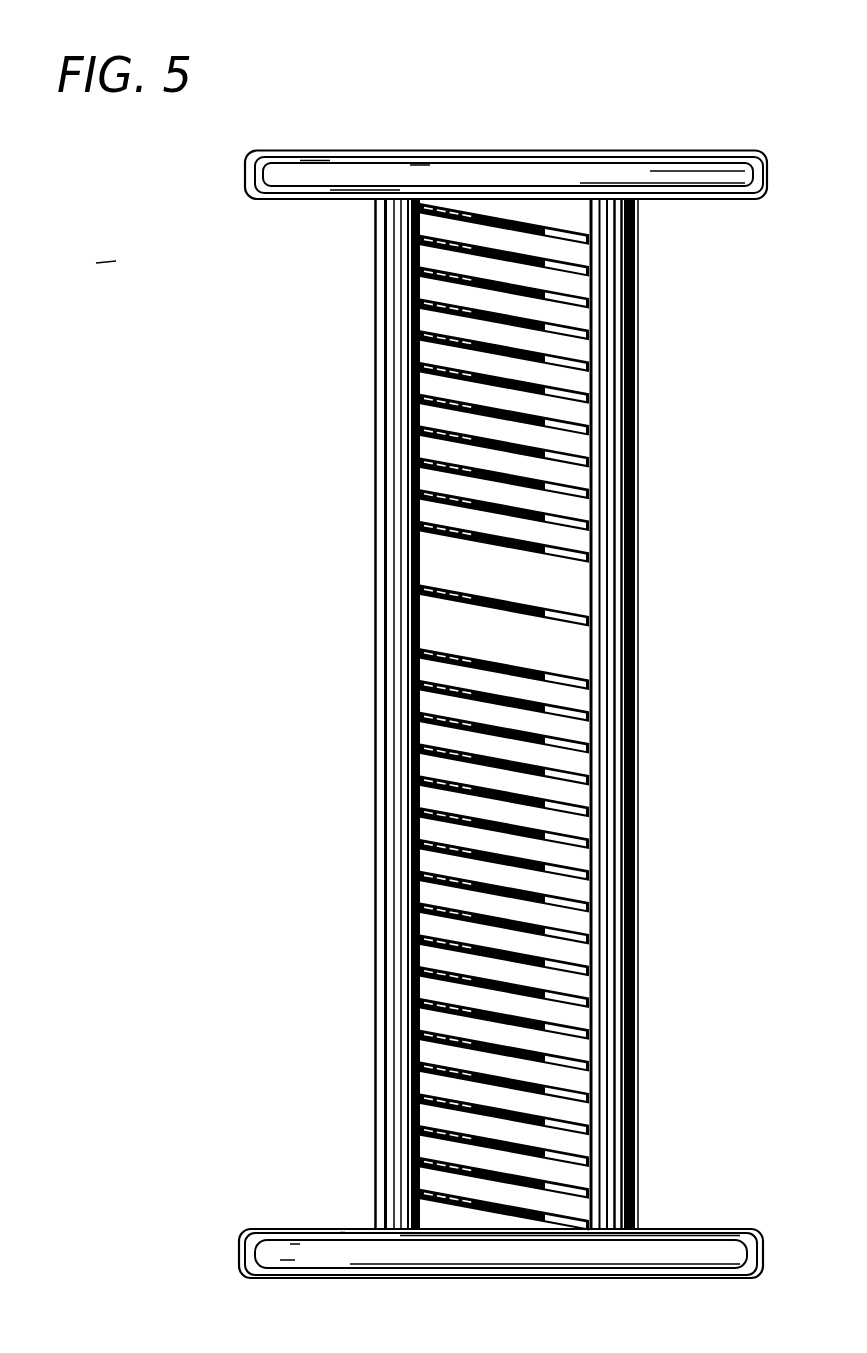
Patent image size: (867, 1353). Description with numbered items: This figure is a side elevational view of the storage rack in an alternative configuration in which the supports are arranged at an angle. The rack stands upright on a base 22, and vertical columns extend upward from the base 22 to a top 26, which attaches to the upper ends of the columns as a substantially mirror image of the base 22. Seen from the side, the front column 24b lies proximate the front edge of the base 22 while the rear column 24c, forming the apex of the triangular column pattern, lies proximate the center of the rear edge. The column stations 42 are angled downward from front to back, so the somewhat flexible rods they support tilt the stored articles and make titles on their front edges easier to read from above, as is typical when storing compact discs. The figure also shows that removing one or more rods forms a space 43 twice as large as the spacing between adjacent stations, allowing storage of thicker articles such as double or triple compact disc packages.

The base 22 is at (270, 1250).
The top 26 is at (490, 172).
The column 24b is at (378, 430).
The column 24c is at (637, 425).
The station 42 is at (577, 729).
The space 43 is at (573, 652).